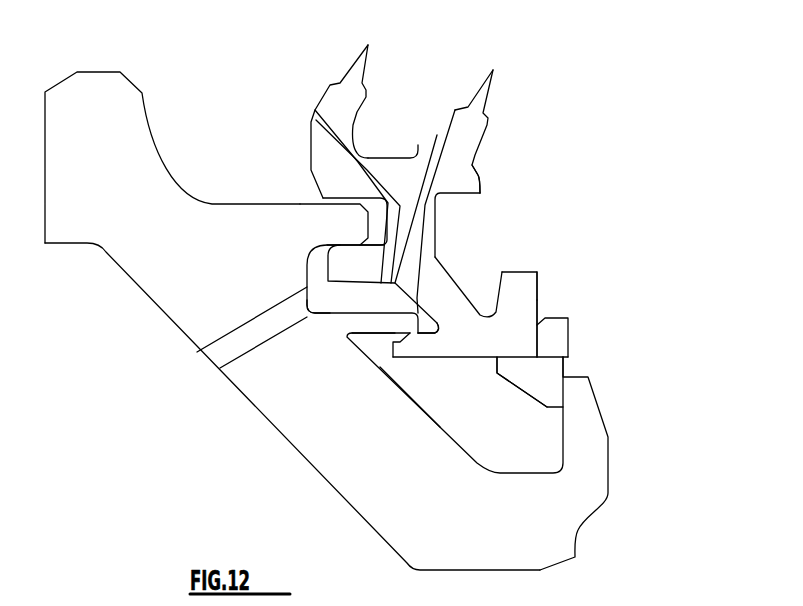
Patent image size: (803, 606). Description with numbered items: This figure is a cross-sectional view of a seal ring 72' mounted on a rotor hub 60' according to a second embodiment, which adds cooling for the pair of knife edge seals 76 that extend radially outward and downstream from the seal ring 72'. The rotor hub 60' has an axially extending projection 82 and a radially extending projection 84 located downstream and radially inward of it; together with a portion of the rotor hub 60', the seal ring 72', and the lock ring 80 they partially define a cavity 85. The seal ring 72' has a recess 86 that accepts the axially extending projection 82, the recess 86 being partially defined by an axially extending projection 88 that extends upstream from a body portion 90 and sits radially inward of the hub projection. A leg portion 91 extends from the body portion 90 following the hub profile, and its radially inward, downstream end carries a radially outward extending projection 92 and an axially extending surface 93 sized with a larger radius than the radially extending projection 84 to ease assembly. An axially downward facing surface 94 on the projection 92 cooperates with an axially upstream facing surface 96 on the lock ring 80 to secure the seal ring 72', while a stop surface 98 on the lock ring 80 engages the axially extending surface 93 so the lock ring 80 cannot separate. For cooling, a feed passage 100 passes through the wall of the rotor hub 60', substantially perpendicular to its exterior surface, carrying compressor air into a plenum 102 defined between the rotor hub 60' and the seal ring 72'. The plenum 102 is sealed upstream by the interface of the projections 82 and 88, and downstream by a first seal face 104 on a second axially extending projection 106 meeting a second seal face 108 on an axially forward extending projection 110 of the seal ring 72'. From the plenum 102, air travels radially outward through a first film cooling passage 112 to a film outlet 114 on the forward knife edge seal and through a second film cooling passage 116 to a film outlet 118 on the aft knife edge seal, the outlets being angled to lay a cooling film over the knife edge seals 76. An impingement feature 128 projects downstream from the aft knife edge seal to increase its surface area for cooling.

The rotor hub 60' is at (292, 321).
The seal ring 72' is at (504, 211).
The knife edge seals 76 is at (358, 53).
The lock ring 80 is at (566, 333).
The axially extending projection 82 is at (327, 213).
The radially extending projection 84 is at (593, 432).
The cavity 85 is at (418, 408).
The recess 86 is at (299, 184).
The axially extending projection 88 is at (348, 271).
The body portion 90 is at (432, 234).
The leg portion 91 is at (448, 292).
The radially outward extending projection 92 is at (522, 282).
The axially extending surface 93 is at (478, 360).
The axially downward facing surface 94 is at (537, 282).
The axially upstream facing surface 96 is at (537, 308).
The stop surface 98 is at (515, 352).
The feed passage 100 is at (212, 366).
The plenum 102 is at (342, 310).
The first seal face 104 is at (385, 341).
The second axially extending projection 106 is at (372, 322).
The second seal face 108 is at (413, 318).
The axially forward extending projection 110 is at (398, 358).
The first film cooling passage 112 is at (358, 162).
The film outlet 114 is at (311, 104).
The second film cooling passage 116 is at (425, 158).
The film outlet 118 is at (434, 126).
The impingement feature 128 is at (480, 183).